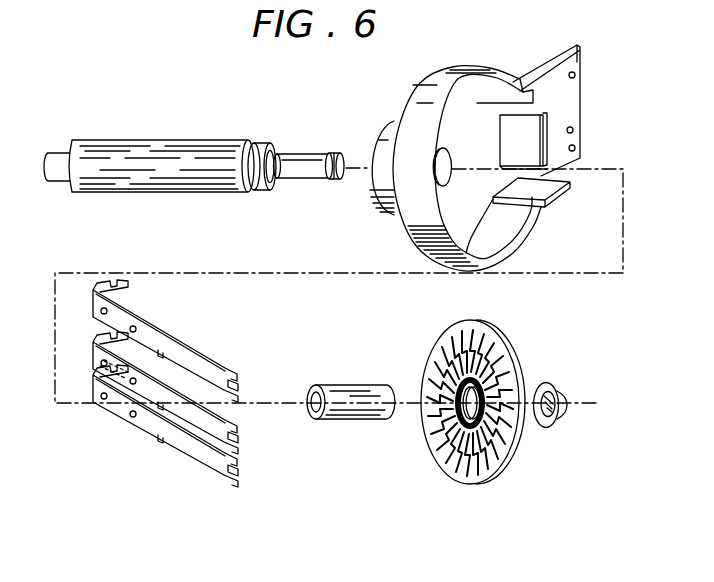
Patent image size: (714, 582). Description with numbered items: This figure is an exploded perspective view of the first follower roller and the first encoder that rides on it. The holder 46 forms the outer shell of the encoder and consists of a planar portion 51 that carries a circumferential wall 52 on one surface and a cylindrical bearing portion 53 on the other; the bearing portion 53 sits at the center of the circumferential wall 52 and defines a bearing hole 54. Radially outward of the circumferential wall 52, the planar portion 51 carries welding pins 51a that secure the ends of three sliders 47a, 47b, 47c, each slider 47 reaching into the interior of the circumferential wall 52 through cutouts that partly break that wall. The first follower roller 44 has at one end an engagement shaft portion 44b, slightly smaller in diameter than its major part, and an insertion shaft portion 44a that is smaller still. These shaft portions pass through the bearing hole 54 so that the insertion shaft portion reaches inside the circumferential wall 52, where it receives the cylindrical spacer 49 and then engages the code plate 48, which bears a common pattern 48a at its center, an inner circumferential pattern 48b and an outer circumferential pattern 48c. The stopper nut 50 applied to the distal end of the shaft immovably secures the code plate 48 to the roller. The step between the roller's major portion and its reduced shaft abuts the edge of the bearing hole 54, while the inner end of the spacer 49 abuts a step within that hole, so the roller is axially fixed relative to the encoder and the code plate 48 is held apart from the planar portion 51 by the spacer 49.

The first follower roller 44 is at (143, 141).
The insertion shaft portion 44a is at (256, 145).
The engagement shaft portion 44b is at (296, 153).
The holder 46 is at (470, 66).
The slider 47 is at (222, 401).
The slider 47a is at (238, 393).
The slider 47b is at (238, 449).
The slider 47c is at (238, 476).
The code plate 48 is at (485, 432).
The common pattern 48a is at (482, 426).
The inner circumferential pattern 48b is at (488, 445).
The outer circumferential pattern 48c is at (491, 486).
The cylindrical spacer 49 is at (352, 383).
The stopper nut 50 is at (548, 425).
The planar portion 51 is at (575, 67).
The welding pins 51a is at (573, 146).
The circumferential wall 52 is at (413, 90).
The cylindrical bearing portion 53 is at (388, 133).
The bearing hole 54 is at (442, 174).